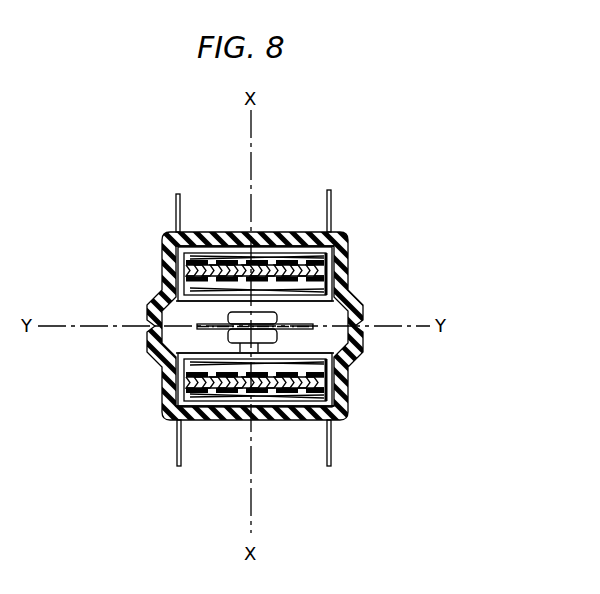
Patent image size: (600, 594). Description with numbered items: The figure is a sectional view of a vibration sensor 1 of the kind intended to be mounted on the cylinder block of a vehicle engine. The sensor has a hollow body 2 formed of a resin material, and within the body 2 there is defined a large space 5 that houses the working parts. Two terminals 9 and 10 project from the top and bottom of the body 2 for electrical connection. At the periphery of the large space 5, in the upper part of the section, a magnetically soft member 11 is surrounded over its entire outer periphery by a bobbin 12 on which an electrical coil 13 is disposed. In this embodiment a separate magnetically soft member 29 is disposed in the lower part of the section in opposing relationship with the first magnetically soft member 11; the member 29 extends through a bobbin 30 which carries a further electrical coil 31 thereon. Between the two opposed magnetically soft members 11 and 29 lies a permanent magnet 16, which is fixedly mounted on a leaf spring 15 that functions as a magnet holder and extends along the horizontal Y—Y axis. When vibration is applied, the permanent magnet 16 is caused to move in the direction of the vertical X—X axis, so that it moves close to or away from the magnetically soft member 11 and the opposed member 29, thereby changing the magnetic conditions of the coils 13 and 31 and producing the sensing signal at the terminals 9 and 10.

The vibration sensor 1 is at (368, 299).
The hollow body 2 is at (221, 244).
The large space 5 is at (168, 340).
The terminal 9 is at (331, 198).
The terminal 10 is at (176, 197).
The magnetically soft member 11 is at (342, 272).
The bobbin 12 is at (306, 255).
The electrical coil 13 is at (268, 248).
The leaf spring 15 is at (197, 323).
The permanent magnet 16 is at (266, 352).
The magnetically soft member 29 is at (346, 396).
The bobbin 30 is at (343, 376).
The electrical coil 31 is at (222, 400).